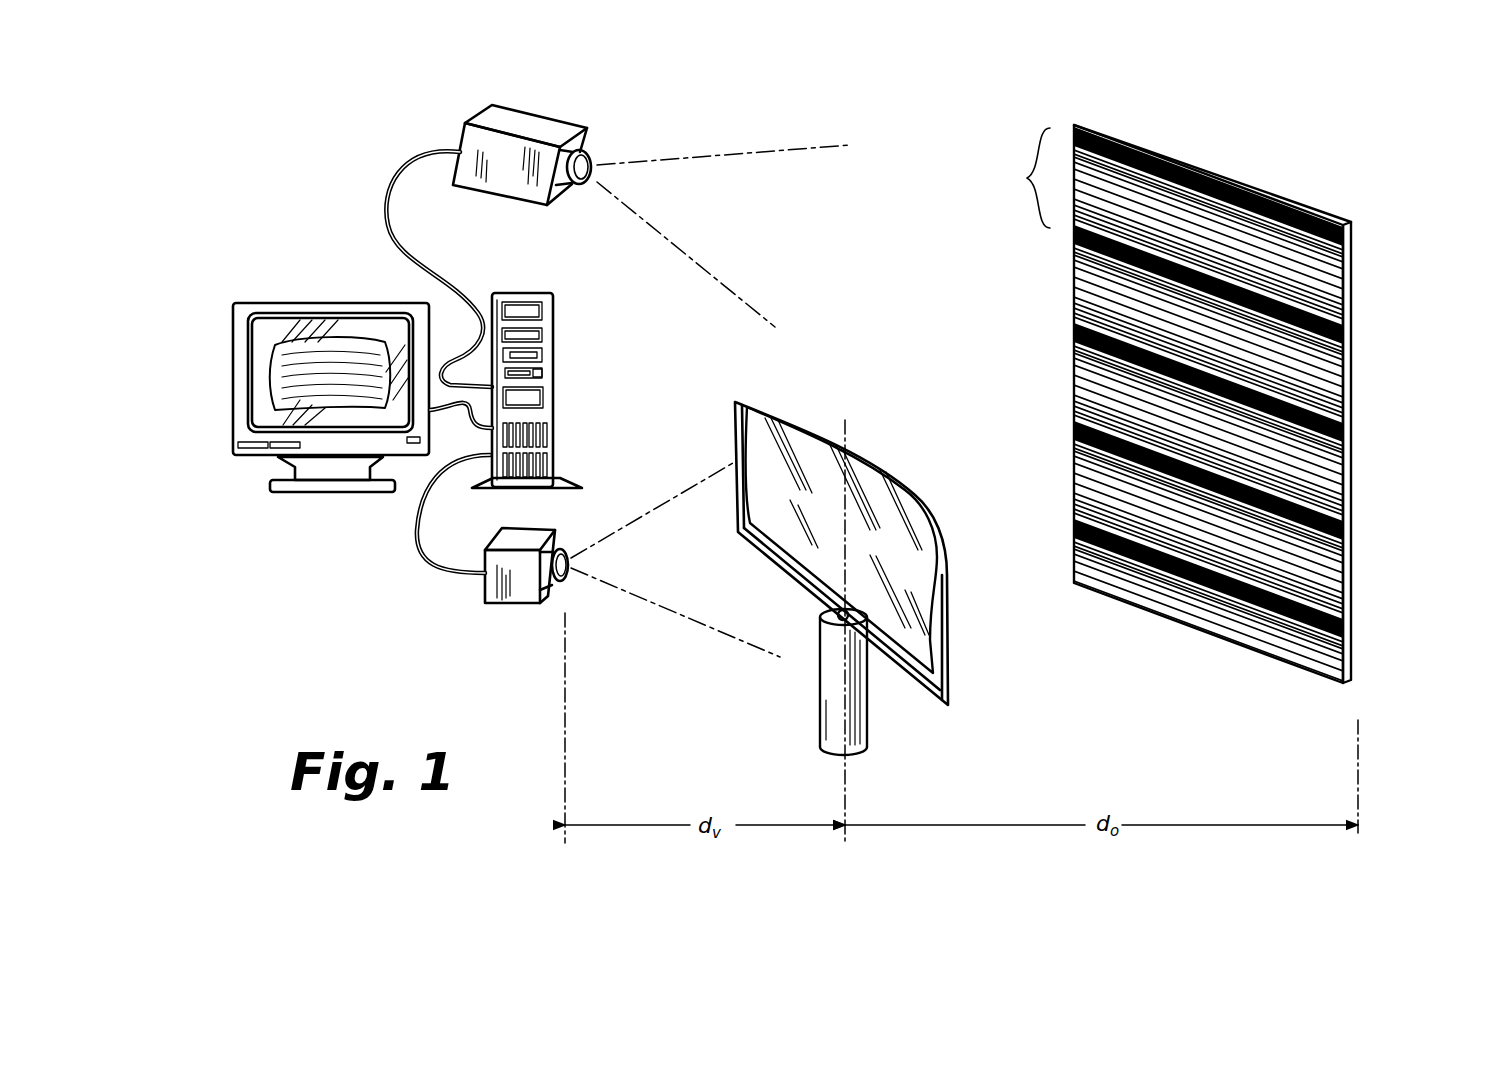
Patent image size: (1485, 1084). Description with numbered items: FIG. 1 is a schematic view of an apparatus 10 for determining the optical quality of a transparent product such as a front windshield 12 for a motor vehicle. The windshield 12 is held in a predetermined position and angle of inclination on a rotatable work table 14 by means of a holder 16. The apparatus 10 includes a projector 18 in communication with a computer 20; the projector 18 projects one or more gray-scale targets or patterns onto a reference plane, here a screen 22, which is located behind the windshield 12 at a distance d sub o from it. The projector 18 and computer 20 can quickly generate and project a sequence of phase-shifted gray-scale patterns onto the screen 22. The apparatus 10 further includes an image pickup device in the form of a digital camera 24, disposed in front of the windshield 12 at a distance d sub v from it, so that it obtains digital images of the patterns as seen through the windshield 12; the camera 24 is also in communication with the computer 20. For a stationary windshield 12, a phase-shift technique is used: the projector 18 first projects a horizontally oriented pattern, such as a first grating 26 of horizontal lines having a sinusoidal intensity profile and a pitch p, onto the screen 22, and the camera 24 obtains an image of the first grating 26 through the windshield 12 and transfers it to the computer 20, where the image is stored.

The apparatus 10 is at (218, 229).
The front windshield 12 is at (868, 470).
The rotatable work table 14 is at (820, 672).
The holder 16 is at (947, 687).
The projector 18 is at (530, 108).
The computer 20 is at (528, 264).
The screen 22 is at (1353, 663).
The digital camera 24 is at (520, 606).
The first grating 26 is at (1064, 356).